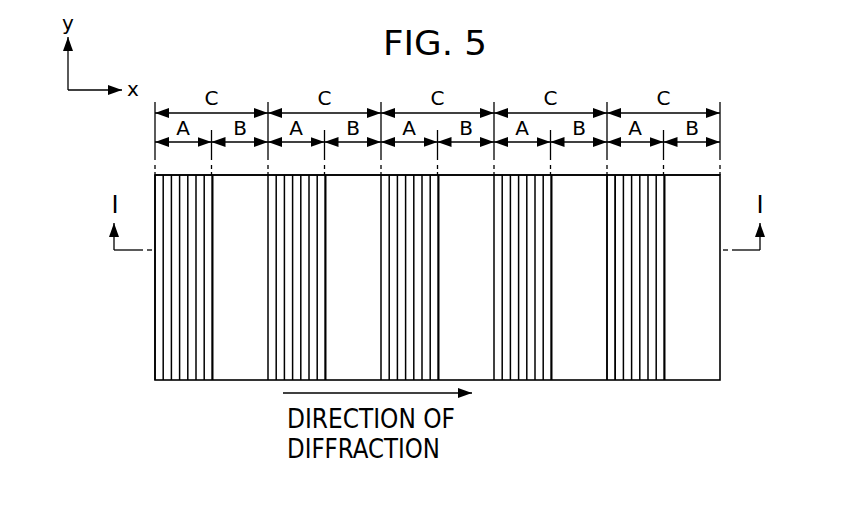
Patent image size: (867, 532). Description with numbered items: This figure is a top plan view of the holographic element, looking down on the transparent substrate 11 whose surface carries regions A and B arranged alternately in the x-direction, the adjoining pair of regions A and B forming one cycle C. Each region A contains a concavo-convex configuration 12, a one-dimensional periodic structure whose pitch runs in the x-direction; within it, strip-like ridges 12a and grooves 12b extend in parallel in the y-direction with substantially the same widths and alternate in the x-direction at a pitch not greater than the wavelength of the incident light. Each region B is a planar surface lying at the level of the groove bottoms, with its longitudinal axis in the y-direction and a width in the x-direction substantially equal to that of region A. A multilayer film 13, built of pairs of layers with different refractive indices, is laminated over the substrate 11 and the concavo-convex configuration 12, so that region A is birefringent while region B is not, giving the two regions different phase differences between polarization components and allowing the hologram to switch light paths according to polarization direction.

The transparent substrate 11 is at (720, 345).
The concavo-convex configuration 12 is at (585, 423).
The ridge 12a is at (610, 381).
The groove 12b is at (620, 381).
The multilayer film 13 is at (767, 320).